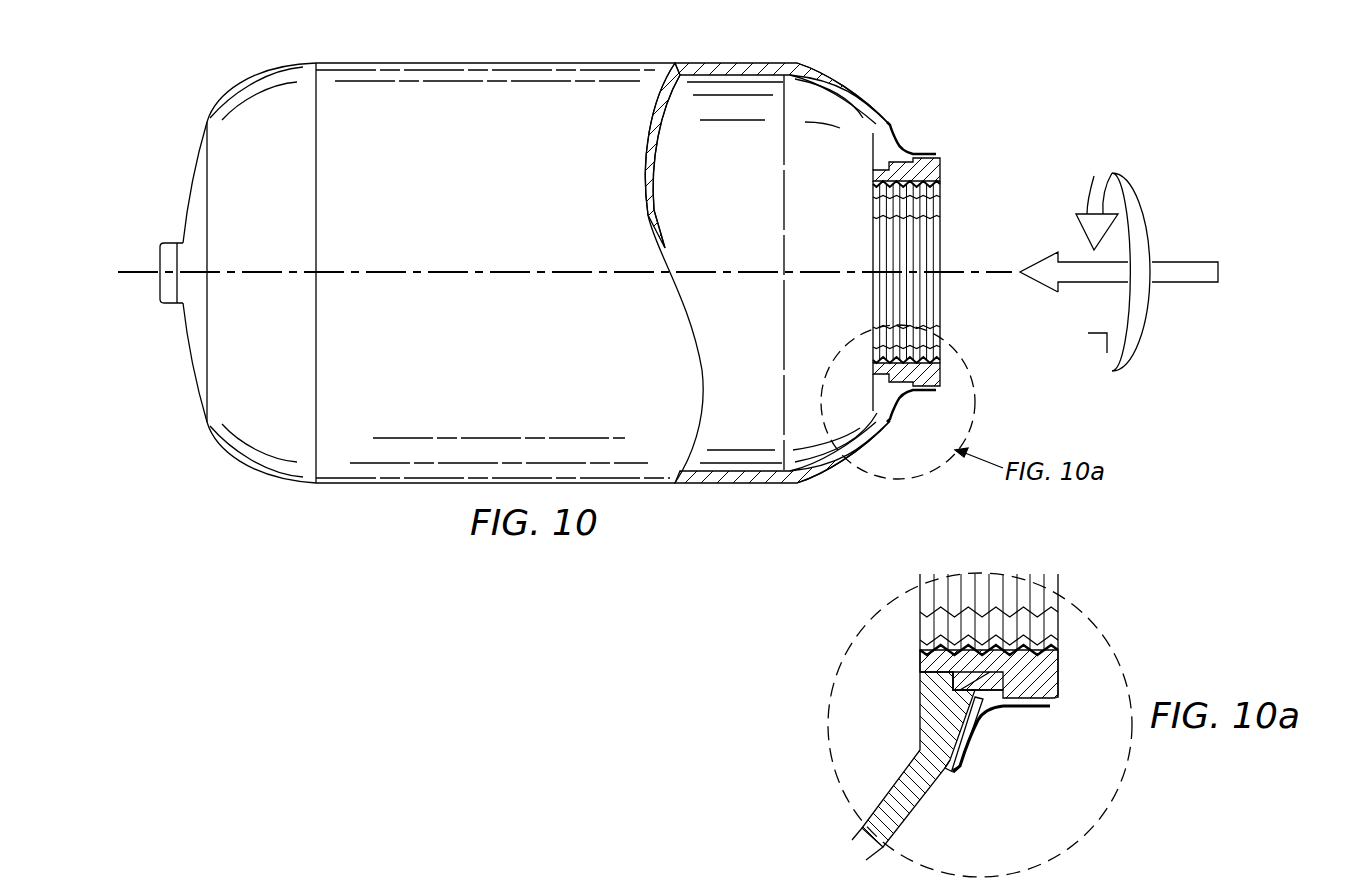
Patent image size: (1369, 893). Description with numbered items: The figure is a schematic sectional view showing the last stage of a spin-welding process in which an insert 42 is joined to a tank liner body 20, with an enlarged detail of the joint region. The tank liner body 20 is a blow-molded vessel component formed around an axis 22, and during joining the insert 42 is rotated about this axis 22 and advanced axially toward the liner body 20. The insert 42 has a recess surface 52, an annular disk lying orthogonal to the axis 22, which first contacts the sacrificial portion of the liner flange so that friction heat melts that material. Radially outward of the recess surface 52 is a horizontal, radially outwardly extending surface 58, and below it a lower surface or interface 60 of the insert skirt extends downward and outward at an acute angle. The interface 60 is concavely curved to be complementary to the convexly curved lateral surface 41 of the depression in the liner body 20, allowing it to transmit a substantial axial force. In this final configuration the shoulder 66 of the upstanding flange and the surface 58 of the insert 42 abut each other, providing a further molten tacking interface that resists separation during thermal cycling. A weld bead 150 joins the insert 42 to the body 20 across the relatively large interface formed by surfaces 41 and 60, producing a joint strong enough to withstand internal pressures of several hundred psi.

In FIG. 10, the tank liner body 20 is at (548, 189).
In FIG. 10, the axis 22 is at (445, 270).
In FIG. 10, the insert 42 is at (962, 241).
In FIG. 10A, the insert 42 is at (1062, 632).
In FIG. 10A, the upper lateral surface 41 is at (935, 734).
In FIG. 10A, the recess surface 52 is at (1012, 678).
In FIG. 10A, the radially outwardly extending surface 58 is at (1012, 708).
In FIG. 10A, the lower surface or interface 60 is at (985, 722).
In FIG. 10A, the shoulder 66 is at (975, 690).
In FIG. 10A, the weld bead 150 is at (958, 774).